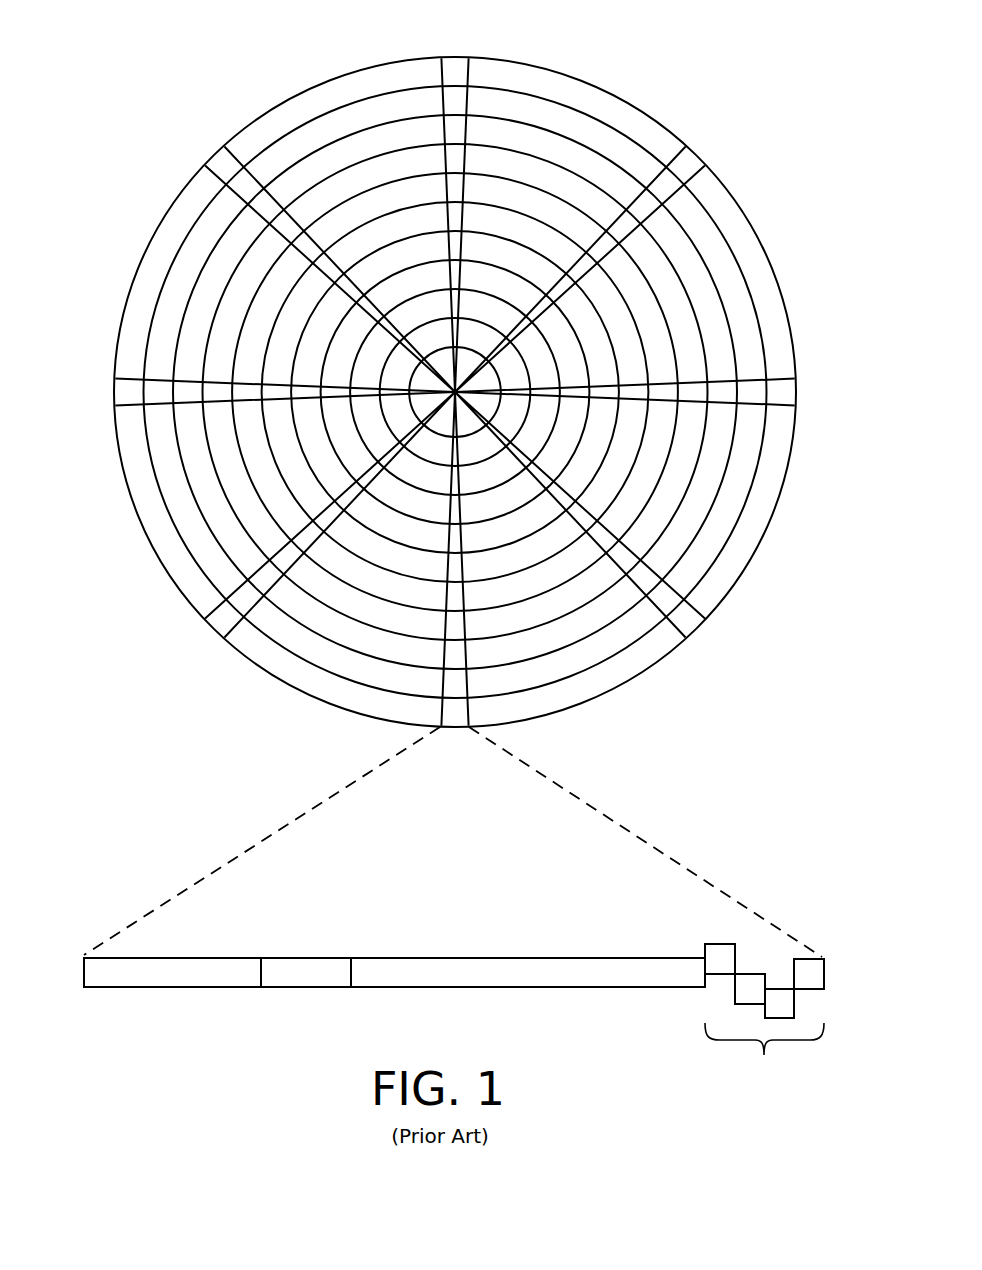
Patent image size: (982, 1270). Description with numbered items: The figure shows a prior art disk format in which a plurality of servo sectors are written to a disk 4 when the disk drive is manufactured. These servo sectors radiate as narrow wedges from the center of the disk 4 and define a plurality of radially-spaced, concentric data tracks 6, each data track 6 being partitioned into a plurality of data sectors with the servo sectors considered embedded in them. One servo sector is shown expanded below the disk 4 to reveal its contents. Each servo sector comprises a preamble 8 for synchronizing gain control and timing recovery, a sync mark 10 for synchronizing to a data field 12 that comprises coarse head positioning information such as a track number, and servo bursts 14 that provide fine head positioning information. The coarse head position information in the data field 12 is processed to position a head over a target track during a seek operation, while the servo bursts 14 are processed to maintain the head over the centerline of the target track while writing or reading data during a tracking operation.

The disk 4 is at (207, 62).
The data track 6 is at (571, 122).
The preamble 8 is at (153, 988).
The sync mark 10 is at (305, 988).
The data field 12 is at (515, 988).
The servo bursts 14 is at (696, 927).